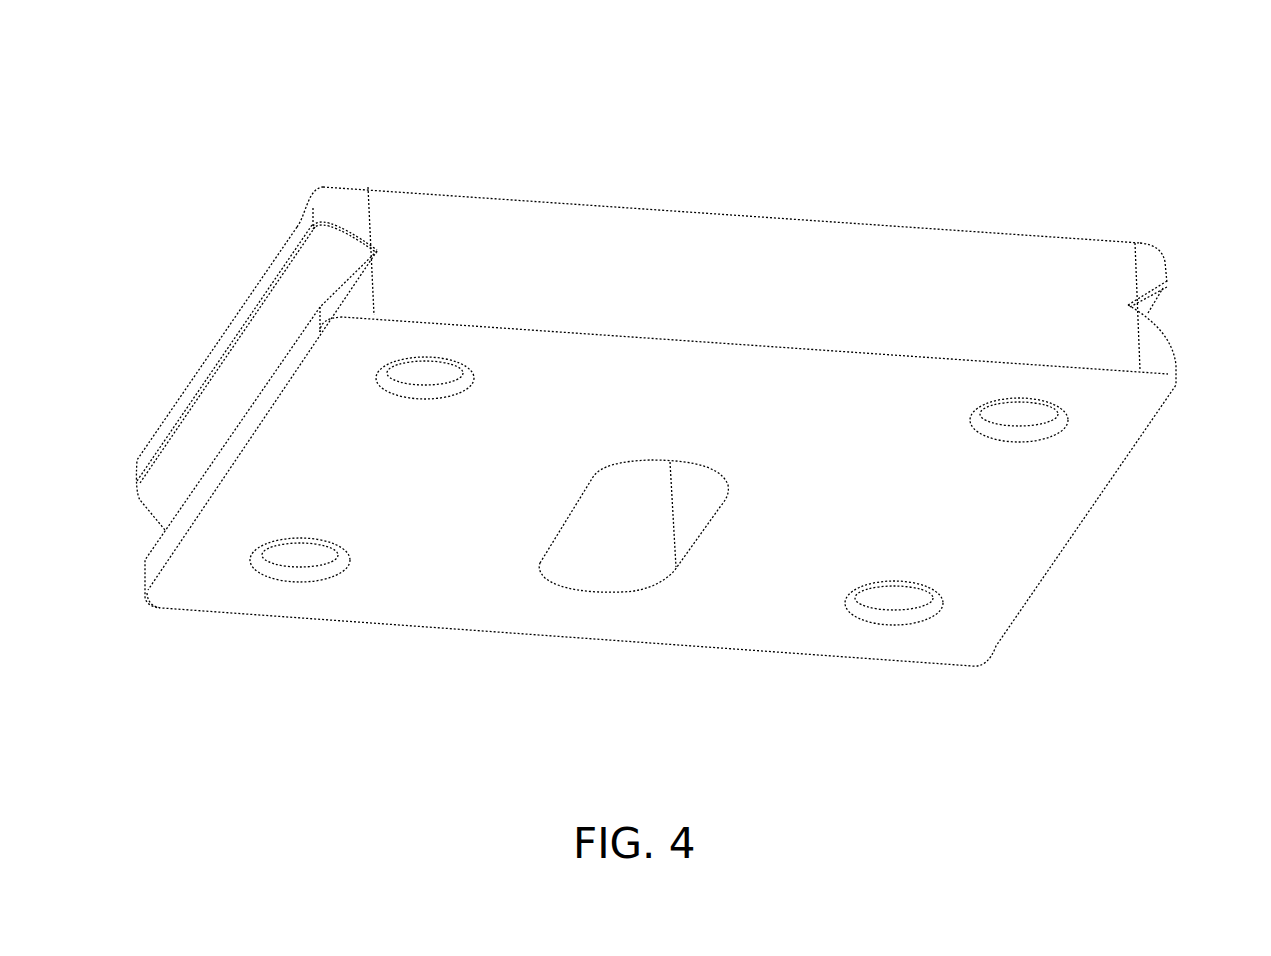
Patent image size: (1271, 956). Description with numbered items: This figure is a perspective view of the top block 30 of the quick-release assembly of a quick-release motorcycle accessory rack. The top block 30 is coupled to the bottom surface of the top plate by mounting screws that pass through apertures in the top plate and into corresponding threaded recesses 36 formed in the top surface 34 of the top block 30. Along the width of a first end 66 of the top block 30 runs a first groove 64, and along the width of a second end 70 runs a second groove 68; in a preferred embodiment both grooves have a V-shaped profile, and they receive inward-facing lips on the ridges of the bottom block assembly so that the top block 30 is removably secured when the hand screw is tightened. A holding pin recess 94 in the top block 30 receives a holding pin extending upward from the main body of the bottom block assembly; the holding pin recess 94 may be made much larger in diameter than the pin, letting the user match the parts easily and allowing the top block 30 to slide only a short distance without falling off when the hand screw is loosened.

The top block 30 is at (525, 105).
The top surface 34 is at (723, 208).
The threaded recesses 36 is at (423, 380).
The first groove 64 is at (1167, 313).
The first end 66 is at (1152, 257).
The second groove 68 is at (275, 333).
The second end 70 is at (328, 203).
The holding pin recess 94 is at (632, 552).